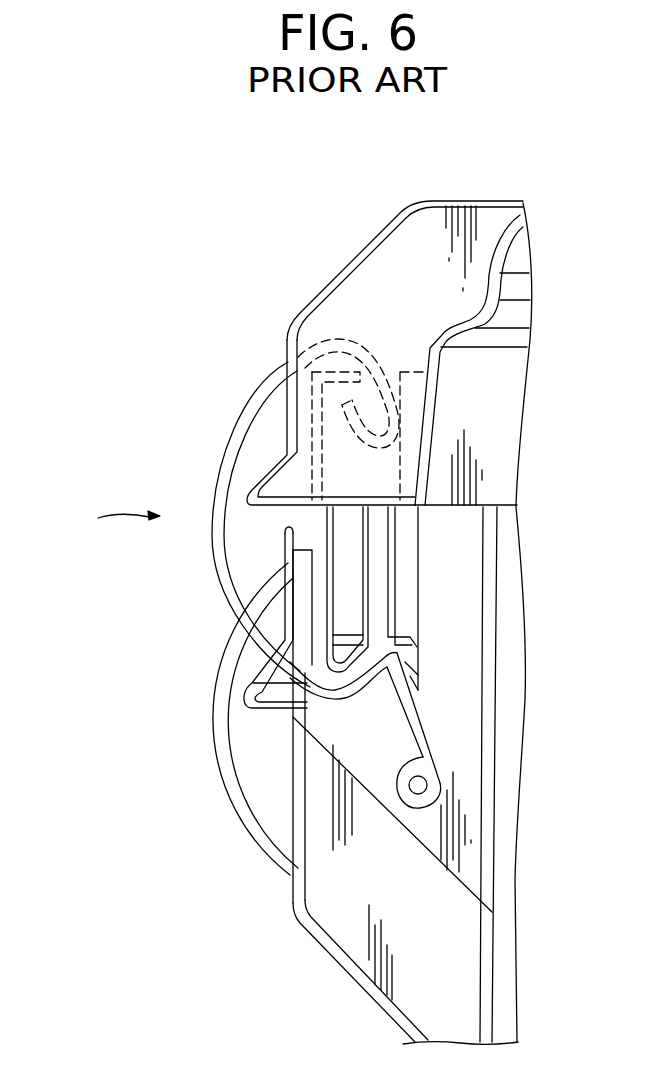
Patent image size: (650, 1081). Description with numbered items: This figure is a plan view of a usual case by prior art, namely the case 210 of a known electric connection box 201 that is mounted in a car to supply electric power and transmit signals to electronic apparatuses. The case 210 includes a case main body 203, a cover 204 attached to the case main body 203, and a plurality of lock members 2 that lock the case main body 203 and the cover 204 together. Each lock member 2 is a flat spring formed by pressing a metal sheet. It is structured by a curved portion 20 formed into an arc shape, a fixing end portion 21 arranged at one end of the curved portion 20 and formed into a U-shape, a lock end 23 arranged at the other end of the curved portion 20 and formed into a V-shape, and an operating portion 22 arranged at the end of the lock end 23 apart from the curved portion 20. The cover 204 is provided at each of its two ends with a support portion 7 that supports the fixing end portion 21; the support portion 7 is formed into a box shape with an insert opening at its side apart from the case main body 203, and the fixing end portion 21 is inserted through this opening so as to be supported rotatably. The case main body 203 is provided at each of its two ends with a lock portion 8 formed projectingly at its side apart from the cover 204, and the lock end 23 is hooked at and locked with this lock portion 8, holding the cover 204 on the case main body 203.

The electric connection box 201 is at (579, 165).
The cover 204 is at (320, 296).
The support portion 7 is at (313, 408).
The lock member 2 is at (228, 447).
The fixing end portion 21 is at (400, 428).
The case 210 is at (103, 516).
The curved portion 20 is at (228, 592).
The lock portion 8 is at (243, 688).
The lock end 23 is at (340, 690).
The operating portion 22 is at (397, 783).
The case main body 203 is at (333, 948).